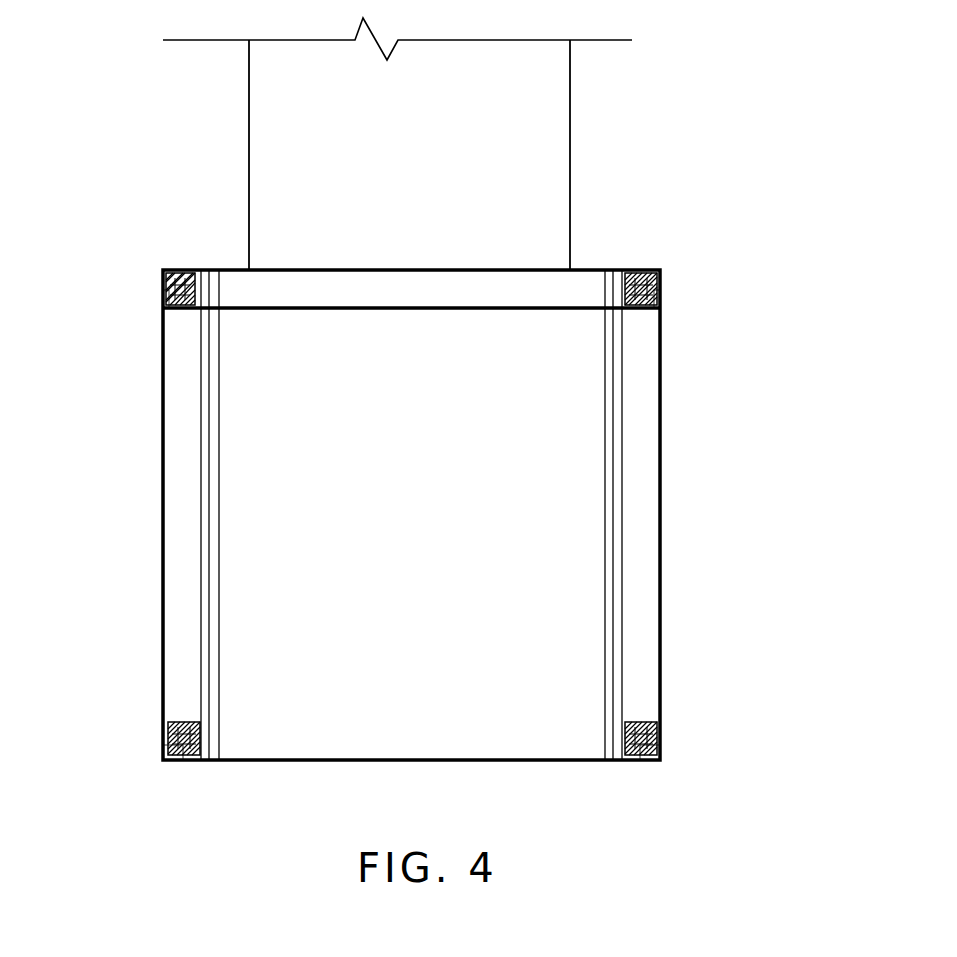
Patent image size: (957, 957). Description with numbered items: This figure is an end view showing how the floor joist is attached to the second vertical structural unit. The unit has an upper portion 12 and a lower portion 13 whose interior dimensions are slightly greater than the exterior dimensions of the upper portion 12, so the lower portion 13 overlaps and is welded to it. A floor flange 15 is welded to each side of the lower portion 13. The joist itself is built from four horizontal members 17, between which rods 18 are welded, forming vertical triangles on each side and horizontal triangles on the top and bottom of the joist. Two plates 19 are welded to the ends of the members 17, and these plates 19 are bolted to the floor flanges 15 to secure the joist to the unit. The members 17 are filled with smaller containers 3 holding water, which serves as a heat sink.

The upper portion 12 is at (570, 163).
The lower portion 13 is at (338, 727).
The floor flange 15 is at (220, 575).
The horizontal member 17 is at (162, 290).
The rod 18 is at (527, 310).
The plate 19 is at (210, 393).
The container 3 is at (162, 293).